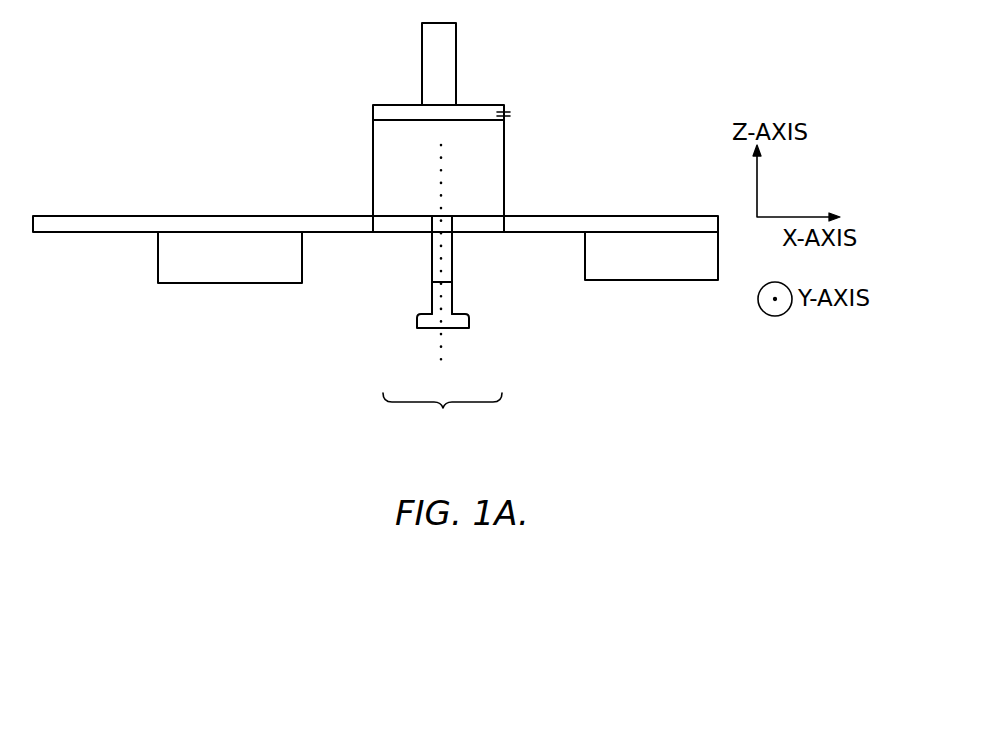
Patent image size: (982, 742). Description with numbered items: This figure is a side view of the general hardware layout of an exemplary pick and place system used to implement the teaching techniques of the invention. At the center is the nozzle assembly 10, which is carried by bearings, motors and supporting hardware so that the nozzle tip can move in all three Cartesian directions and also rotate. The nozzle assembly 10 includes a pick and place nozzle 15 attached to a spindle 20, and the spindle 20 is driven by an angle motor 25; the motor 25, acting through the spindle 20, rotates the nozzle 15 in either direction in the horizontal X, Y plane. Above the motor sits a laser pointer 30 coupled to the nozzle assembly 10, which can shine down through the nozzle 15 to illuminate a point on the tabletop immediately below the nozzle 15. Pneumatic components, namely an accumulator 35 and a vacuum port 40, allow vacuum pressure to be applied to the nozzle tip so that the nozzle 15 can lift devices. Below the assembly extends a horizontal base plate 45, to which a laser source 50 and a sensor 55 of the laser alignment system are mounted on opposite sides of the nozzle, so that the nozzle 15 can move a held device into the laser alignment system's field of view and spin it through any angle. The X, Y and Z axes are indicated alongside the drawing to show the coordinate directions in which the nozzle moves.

The nozzle assembly 10 is at (442, 295).
The pick and place nozzle 15 is at (448, 304).
The spindle 20 is at (432, 257).
The angle motor 25 is at (492, 173).
The laser pointer 30 is at (448, 63).
The accumulator 35 is at (385, 108).
The vacuum port 40 is at (507, 117).
The base plate 45 is at (117, 226).
The laser source 50 is at (212, 270).
The sensor 55 is at (677, 267).